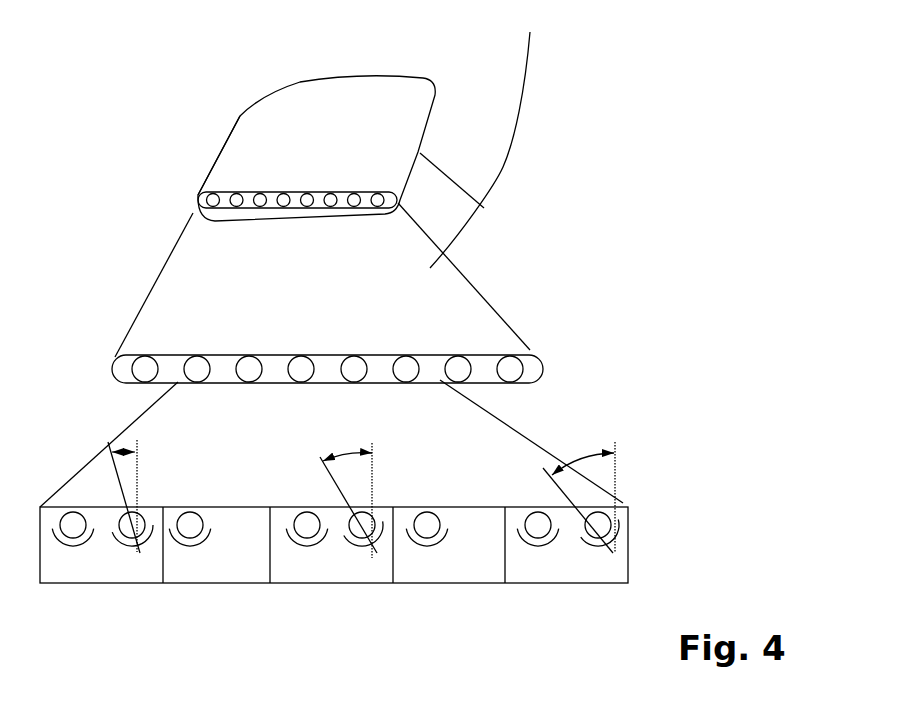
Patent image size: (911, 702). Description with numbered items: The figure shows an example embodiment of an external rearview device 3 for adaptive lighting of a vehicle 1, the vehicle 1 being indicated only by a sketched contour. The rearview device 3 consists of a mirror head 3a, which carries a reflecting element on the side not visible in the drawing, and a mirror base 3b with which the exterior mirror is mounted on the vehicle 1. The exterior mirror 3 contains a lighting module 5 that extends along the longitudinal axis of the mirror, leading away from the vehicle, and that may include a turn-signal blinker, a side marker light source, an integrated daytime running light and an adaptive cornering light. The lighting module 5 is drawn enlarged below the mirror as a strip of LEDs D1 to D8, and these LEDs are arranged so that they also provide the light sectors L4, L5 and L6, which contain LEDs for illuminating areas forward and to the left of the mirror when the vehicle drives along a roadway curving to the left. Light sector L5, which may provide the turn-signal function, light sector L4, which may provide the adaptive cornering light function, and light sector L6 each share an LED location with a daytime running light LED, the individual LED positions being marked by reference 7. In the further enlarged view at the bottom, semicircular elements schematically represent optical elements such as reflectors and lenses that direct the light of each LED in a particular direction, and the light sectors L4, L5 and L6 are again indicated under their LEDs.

The vehicle 1 is at (533, 57).
The external rearview device 3 is at (400, 83).
The mirror head 3a is at (238, 147).
The mirror base 3b is at (445, 190).
The lighting module 5 is at (362, 339).
The light source 7 is at (455, 355).
The light sector L4 is at (285, 214).
The light sector L5 is at (232, 215).
The light sector L6 is at (335, 214).
The LED D1 is at (146, 355).
The LED D8 is at (508, 355).